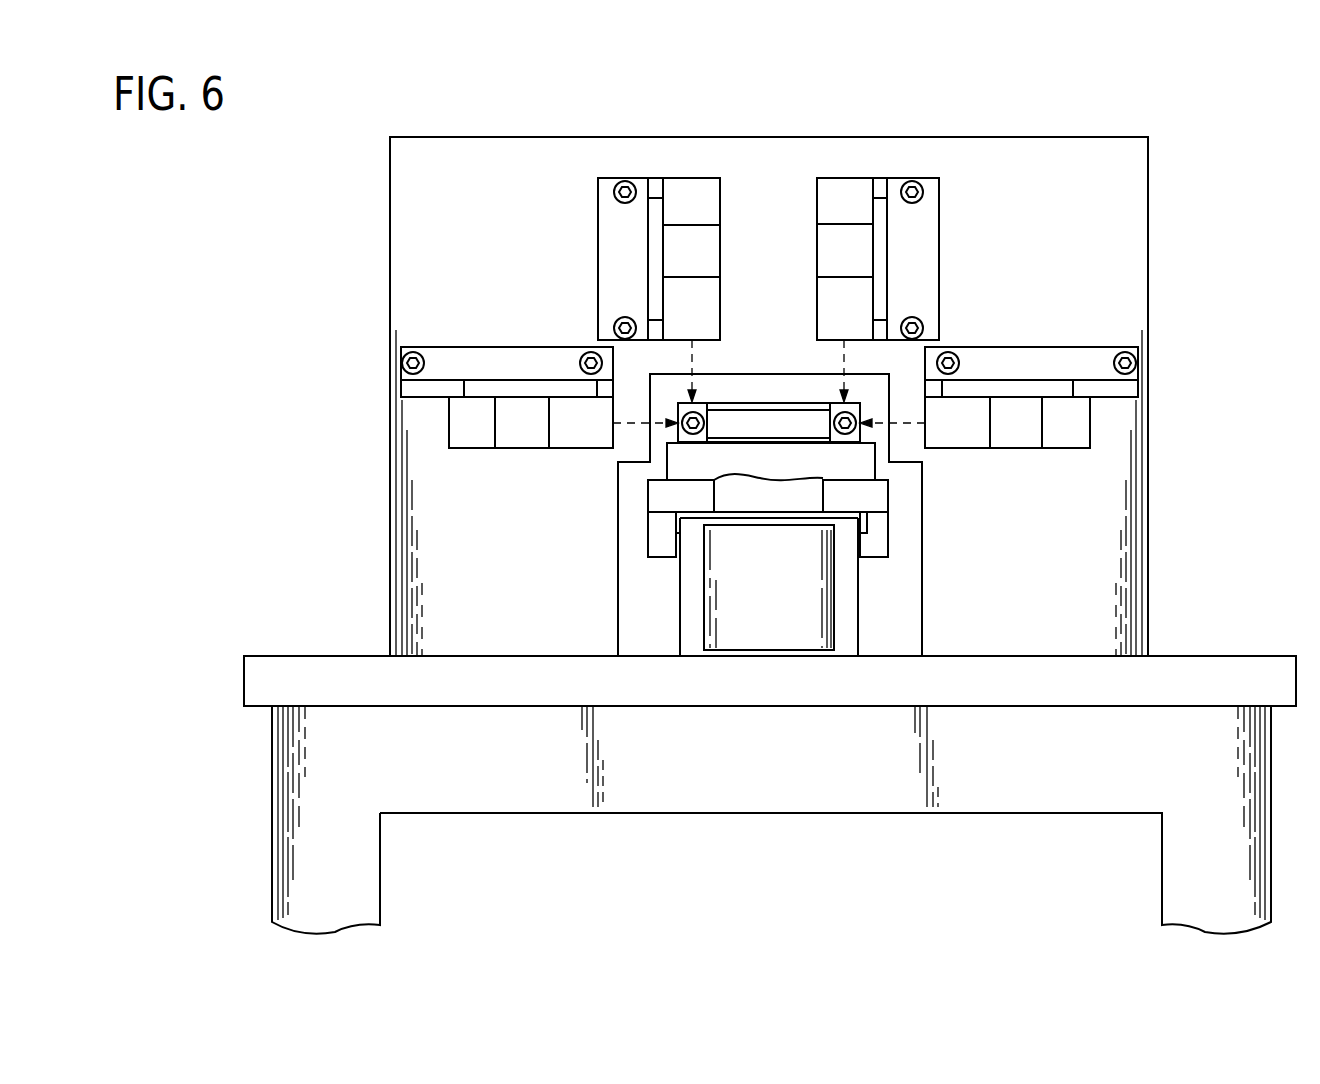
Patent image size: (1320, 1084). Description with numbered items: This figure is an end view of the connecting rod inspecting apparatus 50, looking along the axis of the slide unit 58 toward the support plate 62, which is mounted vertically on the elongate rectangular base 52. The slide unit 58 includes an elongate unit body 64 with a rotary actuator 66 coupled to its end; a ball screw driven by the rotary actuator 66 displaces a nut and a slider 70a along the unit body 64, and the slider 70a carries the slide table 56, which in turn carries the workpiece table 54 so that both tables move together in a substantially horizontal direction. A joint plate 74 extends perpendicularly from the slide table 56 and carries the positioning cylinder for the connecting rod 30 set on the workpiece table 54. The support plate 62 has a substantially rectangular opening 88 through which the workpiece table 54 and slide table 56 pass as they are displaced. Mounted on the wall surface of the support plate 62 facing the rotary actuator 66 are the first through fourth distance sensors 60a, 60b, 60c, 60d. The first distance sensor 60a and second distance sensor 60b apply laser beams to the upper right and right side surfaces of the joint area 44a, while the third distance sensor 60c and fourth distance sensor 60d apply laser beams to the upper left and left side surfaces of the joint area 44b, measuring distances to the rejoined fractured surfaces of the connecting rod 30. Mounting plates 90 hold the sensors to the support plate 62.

The connecting rod inspecting apparatus 50 is at (261, 160).
The base 52 is at (1248, 672).
The workpiece table 54 is at (867, 467).
The slide table 56 is at (661, 497).
The slide unit 58 is at (863, 612).
The support plate 62 is at (1033, 150).
The unit body 64 is at (690, 613).
The rotary actuator 66 is at (773, 630).
The slider 70a is at (657, 537).
The joint plate 74 is at (818, 493).
The opening 88 is at (752, 372).
The guide plate 90 is at (617, 236).
The first distance sensor 60a is at (824, 212).
The second distance sensor 60b is at (1032, 437).
The third distance sensor 60c is at (708, 253).
The fourth distance sensor 60d is at (513, 437).
The joint area 44a is at (862, 418).
The joint area 44b is at (675, 418).
The connecting rod 30 is at (788, 392).